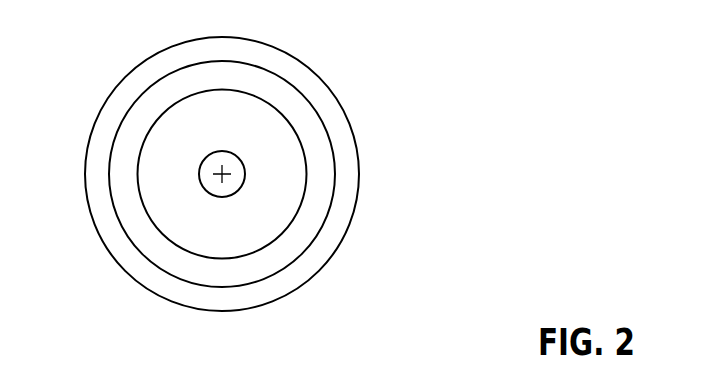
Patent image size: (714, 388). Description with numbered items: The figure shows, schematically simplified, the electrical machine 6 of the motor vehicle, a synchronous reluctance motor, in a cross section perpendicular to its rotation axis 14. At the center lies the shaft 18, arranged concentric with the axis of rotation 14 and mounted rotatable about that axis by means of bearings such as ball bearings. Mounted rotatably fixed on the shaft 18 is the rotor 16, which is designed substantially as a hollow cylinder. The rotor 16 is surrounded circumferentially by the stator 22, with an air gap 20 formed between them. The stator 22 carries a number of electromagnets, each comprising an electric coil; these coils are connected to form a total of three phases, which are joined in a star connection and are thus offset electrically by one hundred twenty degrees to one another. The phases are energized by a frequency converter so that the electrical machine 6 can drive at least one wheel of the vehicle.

The electrical machine 6 is at (437, 160).
The rotation axis 14 is at (224, 177).
The rotor 16 is at (289, 175).
The shaft 18 is at (201, 172).
The air gap 20 is at (123, 172).
The stator 22 is at (336, 128).